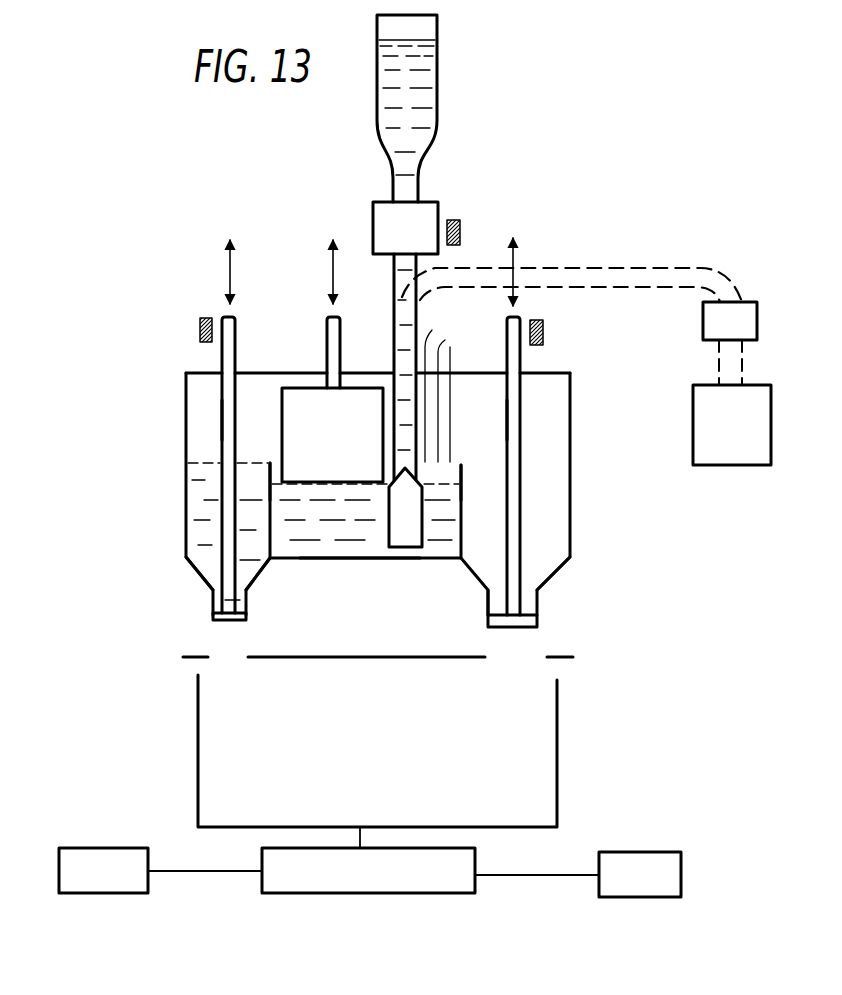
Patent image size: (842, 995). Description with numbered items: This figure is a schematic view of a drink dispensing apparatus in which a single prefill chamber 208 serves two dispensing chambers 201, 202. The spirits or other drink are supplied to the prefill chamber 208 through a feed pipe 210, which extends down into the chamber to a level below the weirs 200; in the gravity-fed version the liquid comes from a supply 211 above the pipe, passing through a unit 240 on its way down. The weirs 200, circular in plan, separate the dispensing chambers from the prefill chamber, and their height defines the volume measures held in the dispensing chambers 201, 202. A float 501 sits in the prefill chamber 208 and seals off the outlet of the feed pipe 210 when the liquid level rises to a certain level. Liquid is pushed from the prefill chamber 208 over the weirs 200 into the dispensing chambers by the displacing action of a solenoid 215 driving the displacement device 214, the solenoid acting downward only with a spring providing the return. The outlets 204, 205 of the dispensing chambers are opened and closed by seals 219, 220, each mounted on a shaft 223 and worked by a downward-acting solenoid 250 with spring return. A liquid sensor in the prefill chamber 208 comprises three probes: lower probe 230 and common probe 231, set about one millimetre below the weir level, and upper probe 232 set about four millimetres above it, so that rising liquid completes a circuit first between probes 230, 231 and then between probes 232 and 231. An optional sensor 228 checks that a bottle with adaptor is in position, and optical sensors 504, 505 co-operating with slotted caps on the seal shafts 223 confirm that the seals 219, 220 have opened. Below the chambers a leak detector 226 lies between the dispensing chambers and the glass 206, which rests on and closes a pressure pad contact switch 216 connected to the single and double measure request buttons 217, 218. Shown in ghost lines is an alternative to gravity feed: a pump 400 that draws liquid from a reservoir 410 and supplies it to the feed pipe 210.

The weirs 200 is at (270, 463).
The dispensing chamber 201 is at (556, 570).
The dispensing chamber 202 is at (256, 573).
The outlet 204 is at (537, 605).
The outlet 205 is at (213, 594).
The glass 206 is at (560, 782).
The prefill chamber 208 is at (354, 560).
The feed pipe 210 is at (394, 325).
The reservoir 211 is at (437, 64).
The displacement device 214 is at (313, 403).
The solenoid 215 is at (572, 263).
The pressure pad contact switch 216 is at (362, 880).
The single measure request button 217 is at (100, 880).
The double measure request button 218 is at (645, 888).
The seal 219 is at (490, 620).
The seal 220 is at (240, 620).
The shaft 223 is at (228, 418).
The leak detector 226 is at (385, 660).
The sensor 228 is at (462, 228).
The lower sensor probe 230 is at (450, 352).
The electrically common probe 231 is at (445, 340).
The upper sensor probe 232 is at (432, 330).
The valve / dosing unit 240 is at (383, 222).
The solenoid 250 is at (246, 272).
The pump 400 is at (718, 320).
The reservoir 410 is at (717, 425).
The float 501 is at (405, 520).
The sensor 504 is at (543, 337).
The sensor 505 is at (200, 330).